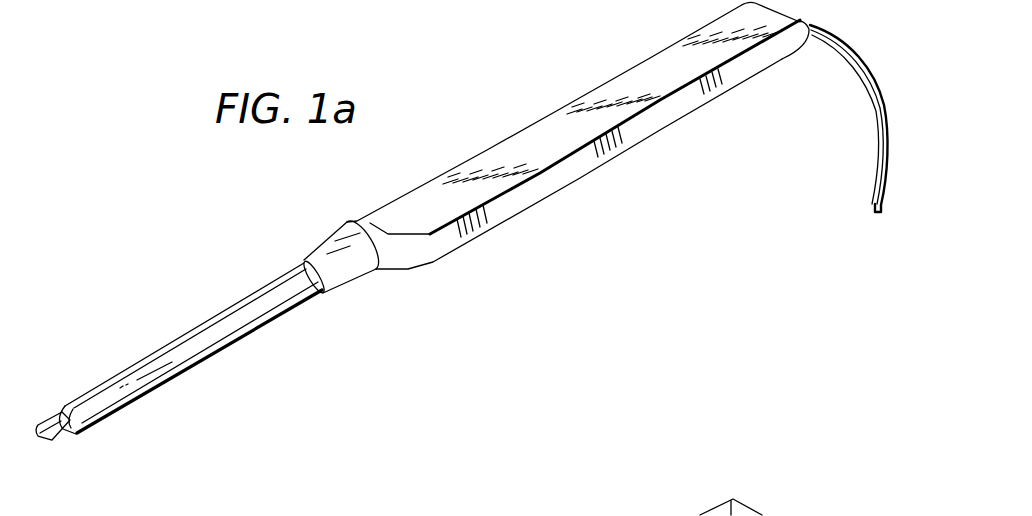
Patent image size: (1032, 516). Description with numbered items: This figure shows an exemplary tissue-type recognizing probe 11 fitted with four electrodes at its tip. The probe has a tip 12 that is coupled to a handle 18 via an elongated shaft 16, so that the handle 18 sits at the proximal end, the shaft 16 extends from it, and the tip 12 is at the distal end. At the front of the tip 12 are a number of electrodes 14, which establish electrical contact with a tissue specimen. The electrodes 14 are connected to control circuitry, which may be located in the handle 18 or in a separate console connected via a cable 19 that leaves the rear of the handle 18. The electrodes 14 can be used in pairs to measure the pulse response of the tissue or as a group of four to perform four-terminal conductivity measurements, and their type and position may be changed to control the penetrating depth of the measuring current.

The tissue-type recognizing probe 11 is at (510, 90).
The tip 12 is at (70, 434).
The electrodes 14 is at (45, 445).
The shaft 16 is at (248, 332).
The handle 18 is at (662, 131).
The cable 19 is at (866, 57).